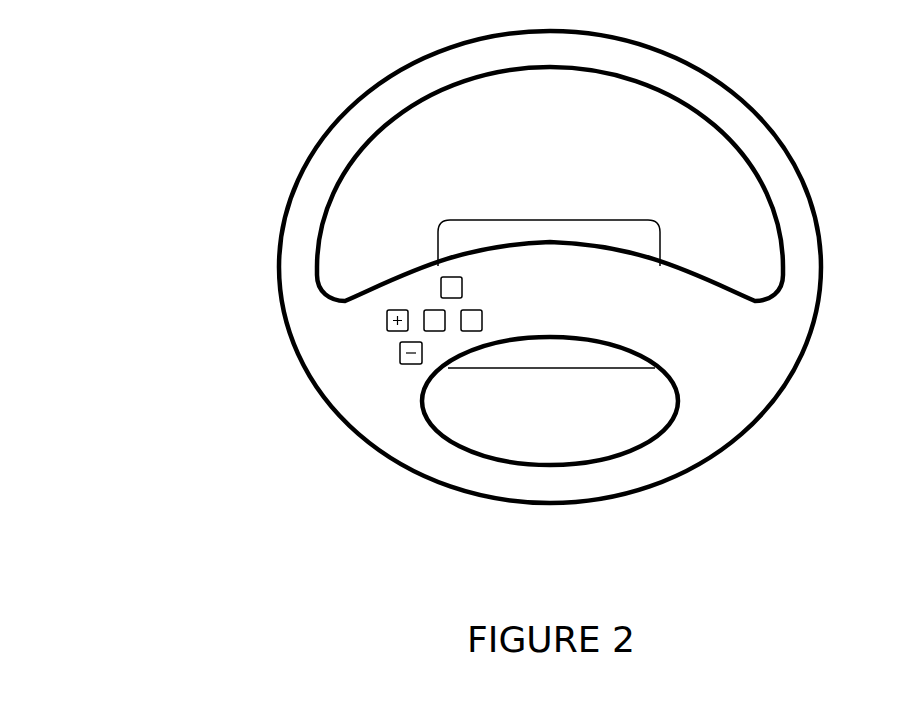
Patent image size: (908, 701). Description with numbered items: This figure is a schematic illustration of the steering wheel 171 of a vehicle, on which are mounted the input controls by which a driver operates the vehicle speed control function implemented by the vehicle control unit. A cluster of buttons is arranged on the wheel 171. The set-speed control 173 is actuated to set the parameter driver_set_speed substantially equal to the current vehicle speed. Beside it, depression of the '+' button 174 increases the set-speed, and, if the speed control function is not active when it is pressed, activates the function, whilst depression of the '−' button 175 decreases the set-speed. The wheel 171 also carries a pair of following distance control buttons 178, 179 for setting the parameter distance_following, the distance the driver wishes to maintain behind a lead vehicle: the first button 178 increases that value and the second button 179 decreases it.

The steering wheel 171 is at (795, 219).
The set-speed control 173 is at (428, 310).
The '+' button 174 is at (387, 318).
The '−' button 175 is at (400, 358).
The following distance control button 178 is at (452, 277).
The following distance control button 179 is at (471, 331).